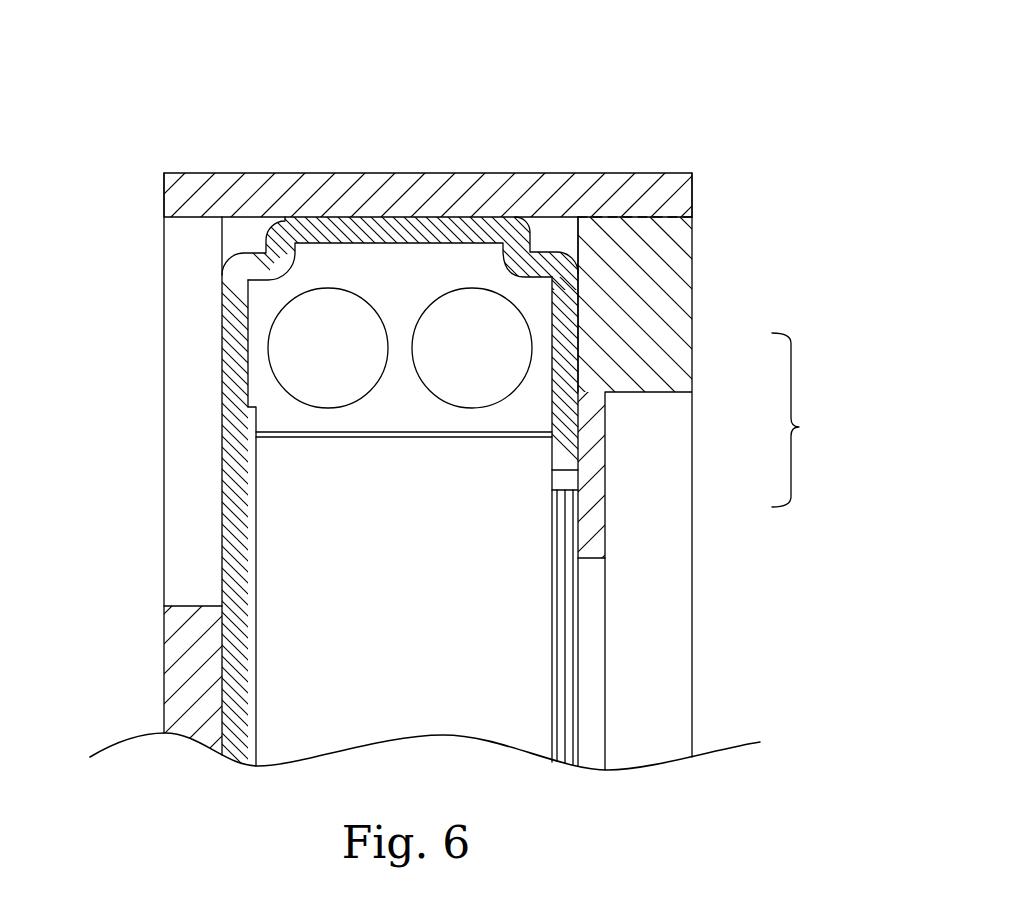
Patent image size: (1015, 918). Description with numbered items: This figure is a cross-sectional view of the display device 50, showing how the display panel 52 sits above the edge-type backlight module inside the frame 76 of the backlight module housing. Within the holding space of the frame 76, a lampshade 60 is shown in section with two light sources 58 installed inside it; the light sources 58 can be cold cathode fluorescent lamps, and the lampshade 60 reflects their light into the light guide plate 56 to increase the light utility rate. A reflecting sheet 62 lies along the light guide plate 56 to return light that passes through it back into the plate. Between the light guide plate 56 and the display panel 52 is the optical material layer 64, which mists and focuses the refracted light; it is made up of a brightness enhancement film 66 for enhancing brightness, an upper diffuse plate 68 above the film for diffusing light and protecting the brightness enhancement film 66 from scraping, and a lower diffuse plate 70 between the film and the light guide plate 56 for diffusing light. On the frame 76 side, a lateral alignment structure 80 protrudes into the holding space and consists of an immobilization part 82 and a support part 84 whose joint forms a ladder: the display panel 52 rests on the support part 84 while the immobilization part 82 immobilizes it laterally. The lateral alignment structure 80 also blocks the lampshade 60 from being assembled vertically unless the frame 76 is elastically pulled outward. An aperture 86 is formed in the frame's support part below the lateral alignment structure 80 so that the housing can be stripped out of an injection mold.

The display device 50 is at (849, 103).
The display panel 52 is at (680, 672).
The light guide plate 56 is at (277, 555).
The light sources 58 is at (497, 283).
The lampshades 60 is at (488, 232).
The reflecting sheet 62 is at (252, 465).
The optical material layer 64 is at (490, 617).
The brightness enhancement film 66 is at (565, 565).
The upper diffuse plate 68 is at (575, 528).
The lower diffuse plate 70 is at (477, 493).
The frame 76 is at (296, 200).
The lateral alignment structure 80 is at (799, 427).
The immobilization part 82 is at (680, 366).
The support part 84 is at (600, 470).
The aperture 86 is at (188, 366).